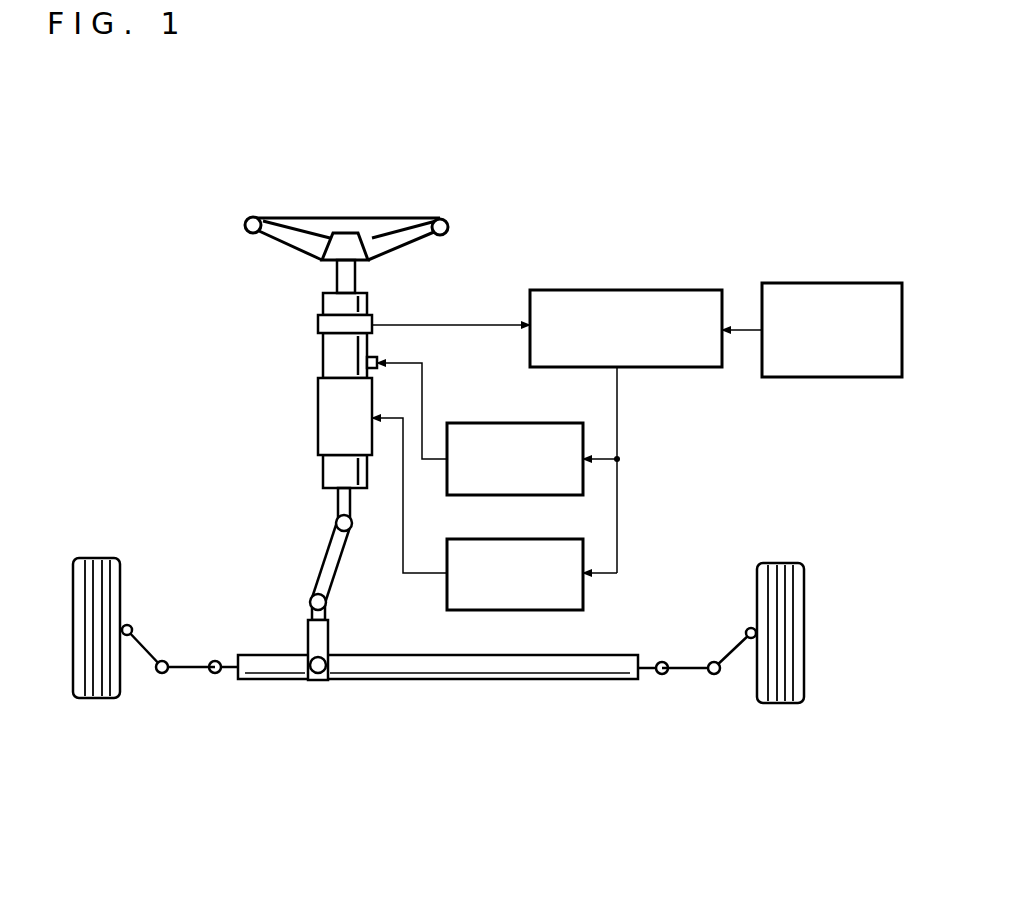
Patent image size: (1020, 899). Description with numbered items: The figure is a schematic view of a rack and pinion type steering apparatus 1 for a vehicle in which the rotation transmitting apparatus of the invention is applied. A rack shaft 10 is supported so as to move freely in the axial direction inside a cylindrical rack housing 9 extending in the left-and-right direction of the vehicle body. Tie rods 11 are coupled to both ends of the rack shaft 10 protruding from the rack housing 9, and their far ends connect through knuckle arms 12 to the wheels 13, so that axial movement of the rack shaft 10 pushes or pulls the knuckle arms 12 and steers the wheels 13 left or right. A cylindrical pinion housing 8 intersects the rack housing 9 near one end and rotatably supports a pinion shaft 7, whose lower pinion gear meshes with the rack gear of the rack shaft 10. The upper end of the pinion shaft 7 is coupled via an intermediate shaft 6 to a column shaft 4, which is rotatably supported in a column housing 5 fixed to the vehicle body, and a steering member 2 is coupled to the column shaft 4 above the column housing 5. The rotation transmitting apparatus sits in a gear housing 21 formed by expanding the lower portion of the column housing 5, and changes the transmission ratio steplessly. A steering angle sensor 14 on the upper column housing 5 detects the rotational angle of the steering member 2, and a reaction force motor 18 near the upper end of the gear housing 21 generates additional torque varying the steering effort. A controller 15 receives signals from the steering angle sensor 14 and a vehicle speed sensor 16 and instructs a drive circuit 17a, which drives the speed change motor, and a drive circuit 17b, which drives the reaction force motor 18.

The rack and pinion type steering apparatus 1 is at (205, 450).
The steering member 2 is at (245, 222).
The column shaft 4 is at (337, 276).
The column housing 5 is at (367, 302).
The intermediate shaft 6 is at (327, 560).
The pinion shaft 7 is at (308, 615).
The pinion housing 8 is at (312, 640).
The rack housing 9 is at (393, 673).
The rack shaft 10 is at (232, 668).
The tie rods 11 is at (185, 668).
The knuckle arms 12 is at (135, 637).
The wheels 13 is at (95, 558).
The steering angle sensor 14 is at (318, 325).
The controller 15 is at (590, 290).
The vehicle speed sensor 16 is at (830, 283).
The drive circuit 17a is at (493, 423).
The drive circuit 17b is at (493, 539).
The reaction force motor 18 is at (372, 356).
The gear housing 21 is at (318, 400).